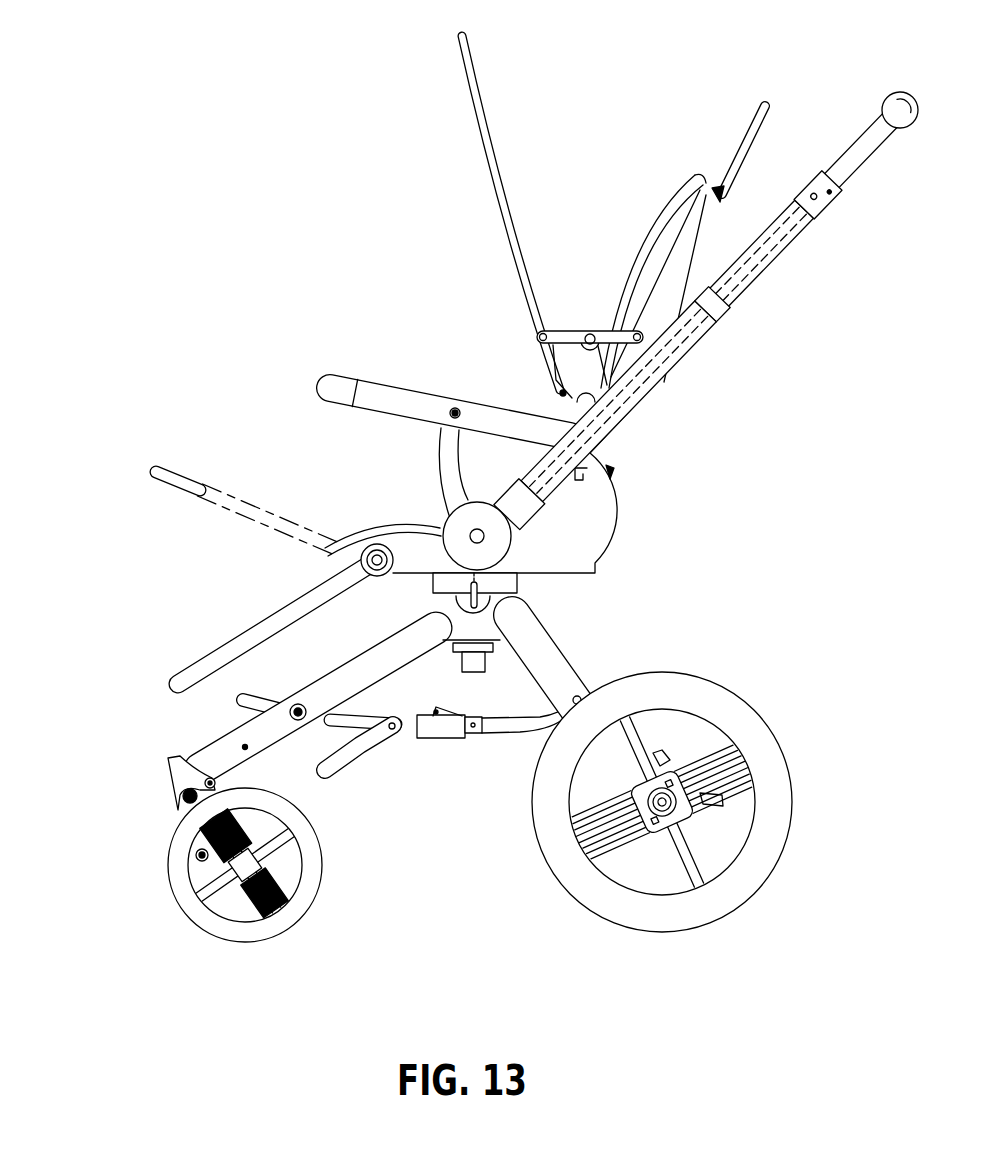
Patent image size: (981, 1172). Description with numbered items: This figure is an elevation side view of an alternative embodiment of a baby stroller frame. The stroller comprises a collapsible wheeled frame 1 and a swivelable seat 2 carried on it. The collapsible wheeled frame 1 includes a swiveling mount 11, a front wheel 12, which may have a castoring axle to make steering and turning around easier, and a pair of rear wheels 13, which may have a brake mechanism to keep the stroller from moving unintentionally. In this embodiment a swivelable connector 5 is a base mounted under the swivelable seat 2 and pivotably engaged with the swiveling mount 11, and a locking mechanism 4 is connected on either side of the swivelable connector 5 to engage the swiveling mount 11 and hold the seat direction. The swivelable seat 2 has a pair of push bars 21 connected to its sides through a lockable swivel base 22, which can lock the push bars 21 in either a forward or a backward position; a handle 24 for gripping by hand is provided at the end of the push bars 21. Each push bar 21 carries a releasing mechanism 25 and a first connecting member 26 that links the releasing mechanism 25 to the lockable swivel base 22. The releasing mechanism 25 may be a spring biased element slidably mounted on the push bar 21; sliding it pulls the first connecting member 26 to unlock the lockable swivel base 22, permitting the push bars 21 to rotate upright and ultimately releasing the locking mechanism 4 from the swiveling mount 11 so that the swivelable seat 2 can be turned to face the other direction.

The collapsible wheeled frame 1 is at (139, 740).
The swivelable seat 2 is at (265, 360).
The locking mechanism 4 is at (435, 630).
The swivelable connector 5 is at (510, 583).
The swiveling mount 11 is at (473, 644).
The front wheel 12 is at (170, 857).
The rear wheels 13 is at (775, 743).
The push bars 21 is at (680, 350).
The lockable swivel base 22 is at (460, 527).
The handle grip 24 is at (898, 93).
The releasing mechanism 25 is at (822, 208).
The first connecting member 26 is at (752, 282).